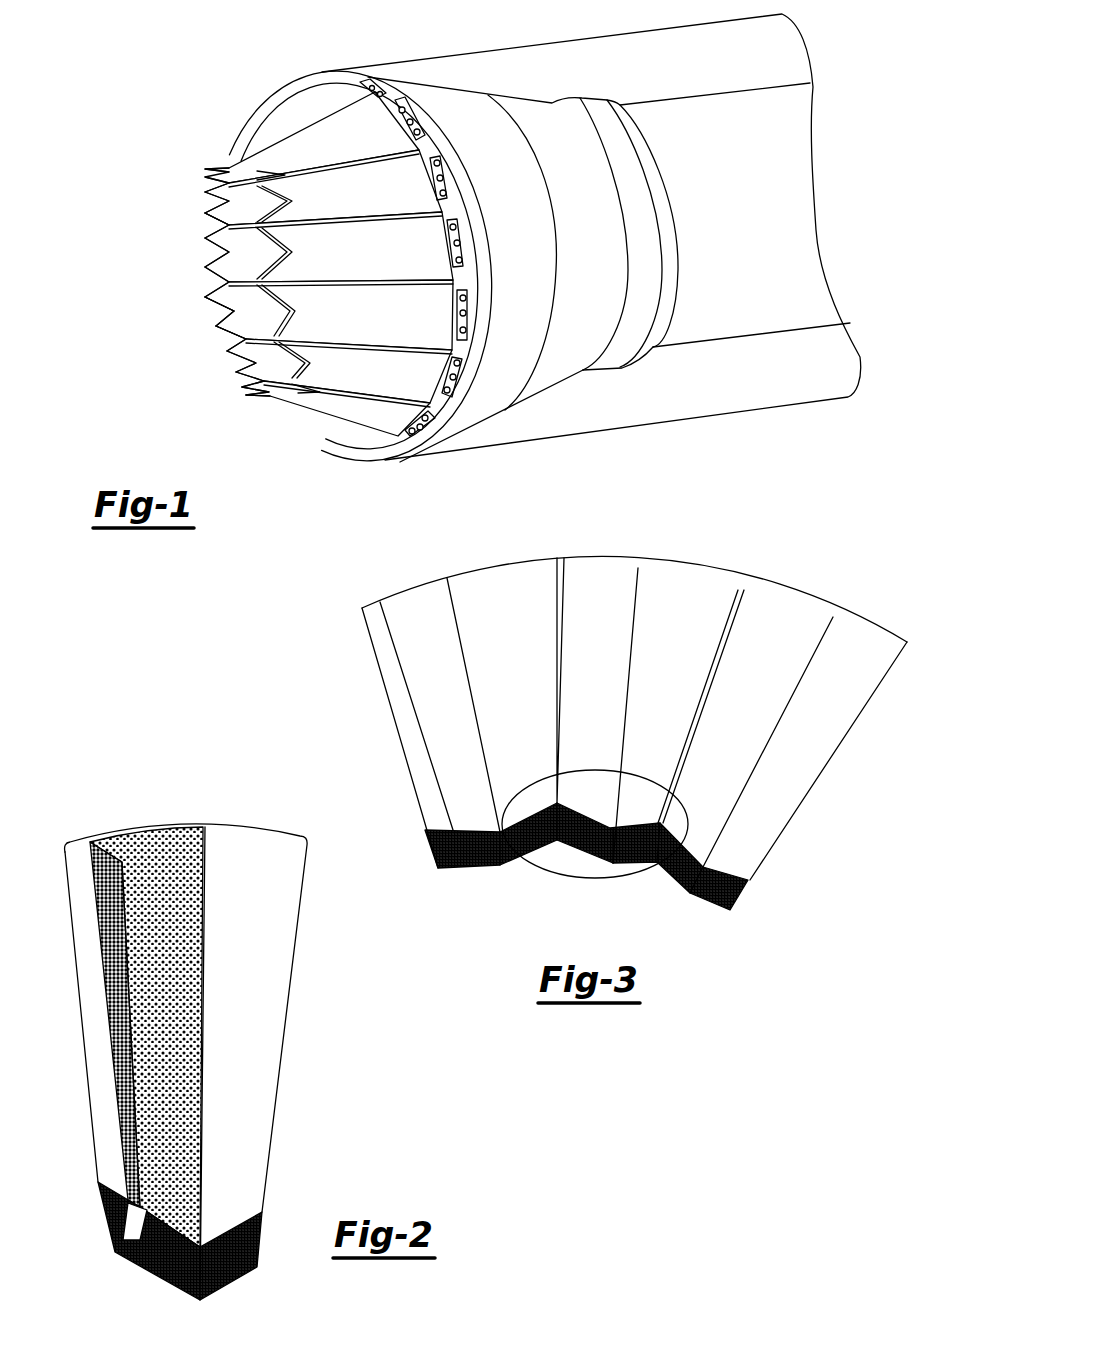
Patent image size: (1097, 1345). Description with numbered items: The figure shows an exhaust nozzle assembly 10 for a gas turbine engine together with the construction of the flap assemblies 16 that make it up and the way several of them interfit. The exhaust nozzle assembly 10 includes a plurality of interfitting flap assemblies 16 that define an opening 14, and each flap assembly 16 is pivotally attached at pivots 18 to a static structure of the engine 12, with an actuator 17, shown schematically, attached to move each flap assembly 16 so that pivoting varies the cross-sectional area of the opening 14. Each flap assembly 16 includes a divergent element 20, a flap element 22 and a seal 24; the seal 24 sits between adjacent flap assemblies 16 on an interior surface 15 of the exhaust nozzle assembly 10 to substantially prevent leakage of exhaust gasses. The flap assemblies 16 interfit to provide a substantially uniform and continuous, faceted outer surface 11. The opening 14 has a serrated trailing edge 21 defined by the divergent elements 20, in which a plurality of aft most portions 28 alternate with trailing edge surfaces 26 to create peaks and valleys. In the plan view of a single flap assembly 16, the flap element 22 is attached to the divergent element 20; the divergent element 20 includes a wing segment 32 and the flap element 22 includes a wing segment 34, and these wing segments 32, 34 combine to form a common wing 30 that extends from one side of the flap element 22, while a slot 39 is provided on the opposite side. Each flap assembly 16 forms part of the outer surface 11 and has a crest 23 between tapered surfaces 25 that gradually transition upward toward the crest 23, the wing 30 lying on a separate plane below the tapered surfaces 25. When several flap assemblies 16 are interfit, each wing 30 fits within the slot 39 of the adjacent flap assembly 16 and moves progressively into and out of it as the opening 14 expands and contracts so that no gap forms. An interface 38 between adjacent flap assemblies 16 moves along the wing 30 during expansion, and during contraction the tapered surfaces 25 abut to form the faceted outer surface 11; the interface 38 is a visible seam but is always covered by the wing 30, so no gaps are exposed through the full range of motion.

In FIG. 1, the exhaust nozzle assembly 10 is at (157, 53).
In FIG. 1, the outer surface 11 is at (242, 137).
In FIG. 1, the engine 12 is at (587, 405).
In FIG. 1, the opening 14 is at (272, 290).
In FIG. 1, the interior surface 15 is at (210, 218).
In FIG. 1, the flap assembly 16 is at (329, 290).
In FIG. 3, the flap assembly 16 is at (501, 871).
In FIG. 2, the flap assembly 16 is at (191, 1042).
In FIG. 1, the actuator 17 is at (460, 235).
In FIG. 1, the pivot 18 is at (382, 90).
In FIG. 1, the divergent element 20 is at (280, 398).
In FIG. 3, the divergent element 20 is at (480, 870).
In FIG. 2, the divergent element 20 is at (240, 1265).
In FIG. 1, the serrated trailing edge 21 is at (207, 301).
In FIG. 1, the flap element 22 is at (333, 402).
In FIG. 3, the flap element 22 is at (634, 685).
In FIG. 2, the flap element 22 is at (202, 1031).
In FIG. 3, the crest 23 is at (449, 577).
In FIG. 2, the crest 23 is at (209, 859).
In FIG. 1, the seal 24 is at (225, 352).
In FIG. 3, the tapered surface 25 is at (523, 588).
In FIG. 2, the tapered surface 25 is at (150, 865).
In FIG. 1, the trailing edge surface 26 is at (200, 195).
In FIG. 1, the aft most portion 28 is at (195, 157).
In FIG. 3, the wing 30 is at (533, 882).
In FIG. 2, the wing 30 is at (151, 1240).
In FIG. 3, the wing segment 32 is at (427, 808).
In FIG. 2, the wing segment 32 is at (110, 1160).
In FIG. 3, the wing segment 34 is at (555, 882).
In FIG. 2, the wing segment 34 is at (171, 1251).
In FIG. 3, the interface 38 is at (565, 585).
In FIG. 3, the slot 39 is at (613, 726).
In FIG. 2, the slot 39 is at (175, 1042).